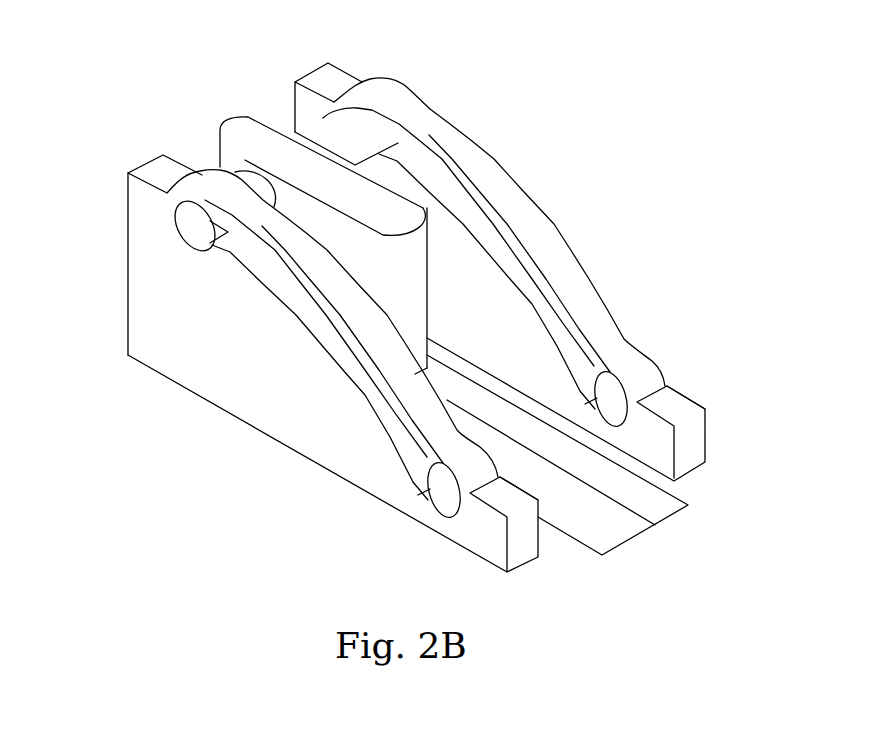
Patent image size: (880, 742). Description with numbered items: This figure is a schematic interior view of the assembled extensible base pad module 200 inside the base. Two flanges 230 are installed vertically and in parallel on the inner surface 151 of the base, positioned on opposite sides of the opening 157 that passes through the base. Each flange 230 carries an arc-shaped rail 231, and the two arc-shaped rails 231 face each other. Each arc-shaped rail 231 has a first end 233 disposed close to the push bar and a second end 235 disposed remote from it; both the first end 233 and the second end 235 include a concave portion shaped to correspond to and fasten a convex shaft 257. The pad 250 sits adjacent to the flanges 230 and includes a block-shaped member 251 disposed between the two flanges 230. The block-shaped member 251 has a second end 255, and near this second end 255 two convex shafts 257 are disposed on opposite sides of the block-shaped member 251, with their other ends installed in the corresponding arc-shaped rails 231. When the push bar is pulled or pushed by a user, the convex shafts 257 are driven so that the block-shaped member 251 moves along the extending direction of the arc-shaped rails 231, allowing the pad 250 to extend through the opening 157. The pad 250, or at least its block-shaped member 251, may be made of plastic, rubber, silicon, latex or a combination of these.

The extensible base pad module 200 is at (537, 68).
The flange 230 is at (120, 273).
The arc-shaped rail 231 is at (360, 393).
The first end 233 is at (440, 503).
The second end 235 is at (167, 222).
The pad 250 is at (207, 151).
The block-shaped member 251 is at (410, 273).
The second end 255 is at (258, 128).
The convex shaft 257 is at (338, 137).
The inner surface 151 is at (742, 503).
The opening 157 is at (597, 523).